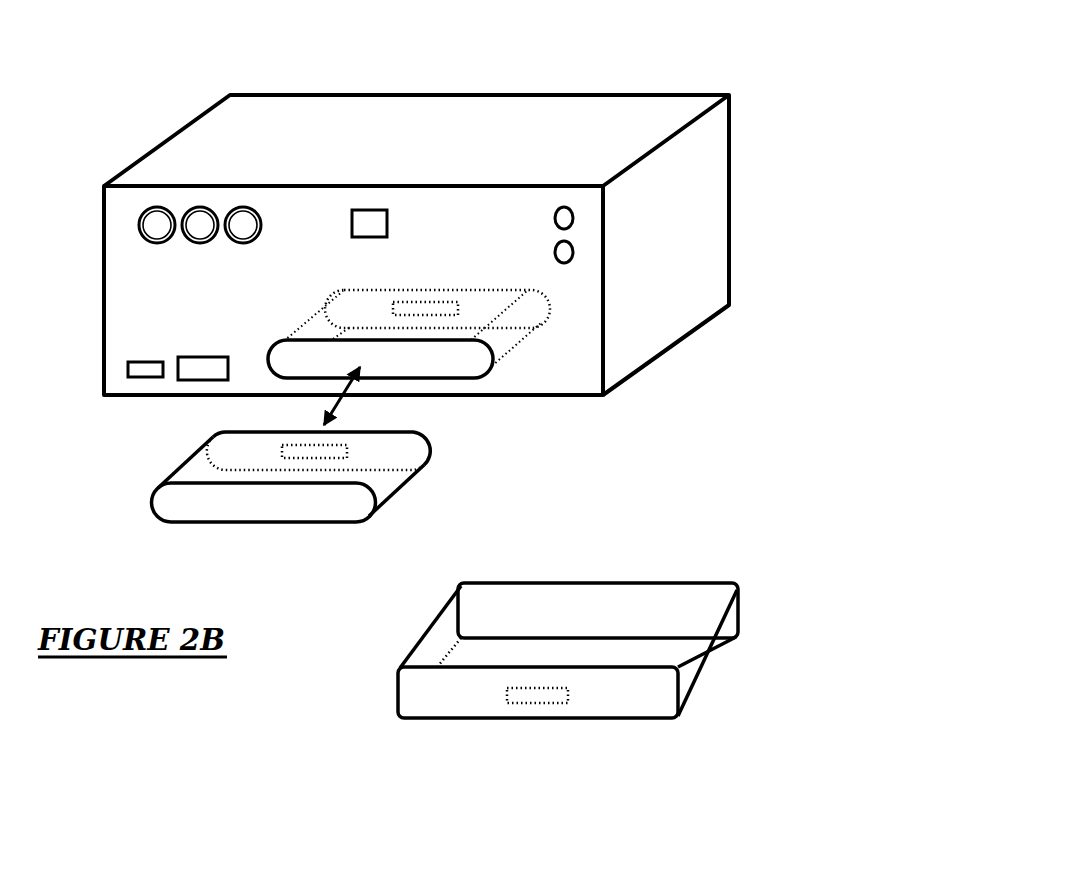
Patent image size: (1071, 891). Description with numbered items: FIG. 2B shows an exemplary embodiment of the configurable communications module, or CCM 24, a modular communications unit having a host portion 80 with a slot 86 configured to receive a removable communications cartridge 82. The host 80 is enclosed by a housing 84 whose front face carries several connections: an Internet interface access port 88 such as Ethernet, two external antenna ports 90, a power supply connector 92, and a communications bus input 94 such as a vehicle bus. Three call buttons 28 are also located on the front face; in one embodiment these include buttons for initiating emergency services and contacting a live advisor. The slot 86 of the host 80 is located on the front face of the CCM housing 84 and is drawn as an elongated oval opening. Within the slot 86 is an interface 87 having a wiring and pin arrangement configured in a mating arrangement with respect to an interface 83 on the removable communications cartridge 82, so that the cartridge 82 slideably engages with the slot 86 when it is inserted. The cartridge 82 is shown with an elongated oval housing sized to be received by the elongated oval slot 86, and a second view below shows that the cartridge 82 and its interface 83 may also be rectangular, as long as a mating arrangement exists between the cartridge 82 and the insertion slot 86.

The configurable communications module 24 is at (415, 228).
The call buttons 28 is at (156, 243).
The host portion 80 is at (624, 355).
The removable communications cartridge 82 is at (156, 492).
The cartridge interface 83 is at (347, 452).
The housing 84 is at (693, 105).
The slot 86 is at (283, 343).
The slot interface 87 is at (413, 302).
The Internet interface access port 88 is at (352, 222).
The external antenna ports 90 is at (555, 218).
The power supply connector 92 is at (138, 361).
The communications bus input 94 is at (190, 356).